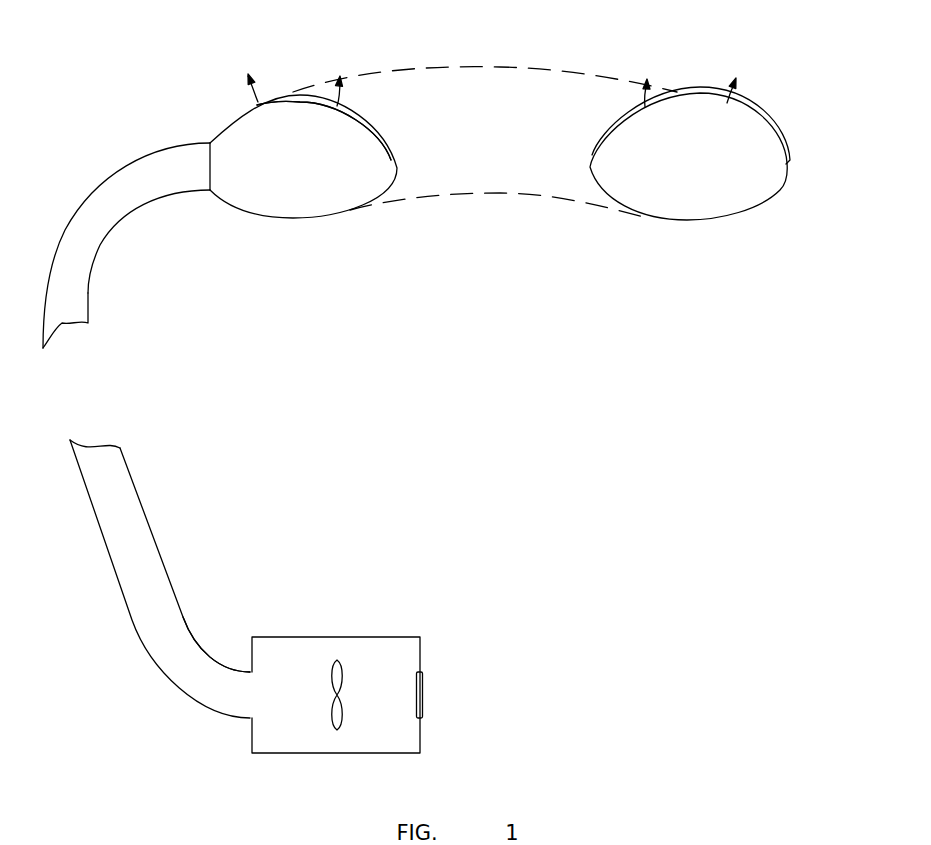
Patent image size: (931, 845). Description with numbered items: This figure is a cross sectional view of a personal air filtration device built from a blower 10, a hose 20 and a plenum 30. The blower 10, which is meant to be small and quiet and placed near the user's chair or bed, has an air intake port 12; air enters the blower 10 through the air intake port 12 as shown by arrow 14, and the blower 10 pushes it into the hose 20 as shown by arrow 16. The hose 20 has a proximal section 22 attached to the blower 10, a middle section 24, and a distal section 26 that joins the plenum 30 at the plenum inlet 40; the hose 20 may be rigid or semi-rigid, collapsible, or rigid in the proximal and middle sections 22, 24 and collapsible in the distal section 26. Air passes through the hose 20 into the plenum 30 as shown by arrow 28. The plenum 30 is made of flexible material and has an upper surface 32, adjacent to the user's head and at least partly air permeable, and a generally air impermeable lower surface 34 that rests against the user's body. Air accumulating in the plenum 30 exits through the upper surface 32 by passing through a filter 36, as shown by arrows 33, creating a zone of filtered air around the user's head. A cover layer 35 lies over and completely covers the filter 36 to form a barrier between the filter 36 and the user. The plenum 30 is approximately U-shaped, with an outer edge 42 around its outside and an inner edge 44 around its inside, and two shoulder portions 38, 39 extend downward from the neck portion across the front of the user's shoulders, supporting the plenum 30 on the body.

The blower 10 is at (440, 453).
The air intake port 12 is at (426, 678).
The arrow 14 is at (437, 698).
The arrow 16 is at (233, 692).
The hose 20 is at (165, 556).
The proximal section 22 is at (183, 617).
The middle section 24 is at (122, 453).
The distal section 26 is at (90, 273).
The arrow 28 is at (237, 168).
The plenum 30 is at (367, 157).
The upper surface 32 is at (302, 72).
The arrows 33 is at (258, 106).
The lower surface 34 is at (348, 212).
The cover layer 35 is at (280, 93).
The filter 36 is at (363, 117).
The shoulder portion 38 is at (267, 232).
The shoulder portion 39 is at (648, 233).
The plenum inlet 40 is at (200, 198).
The outer edge 42 is at (210, 142).
The inner edge 44 is at (397, 173).